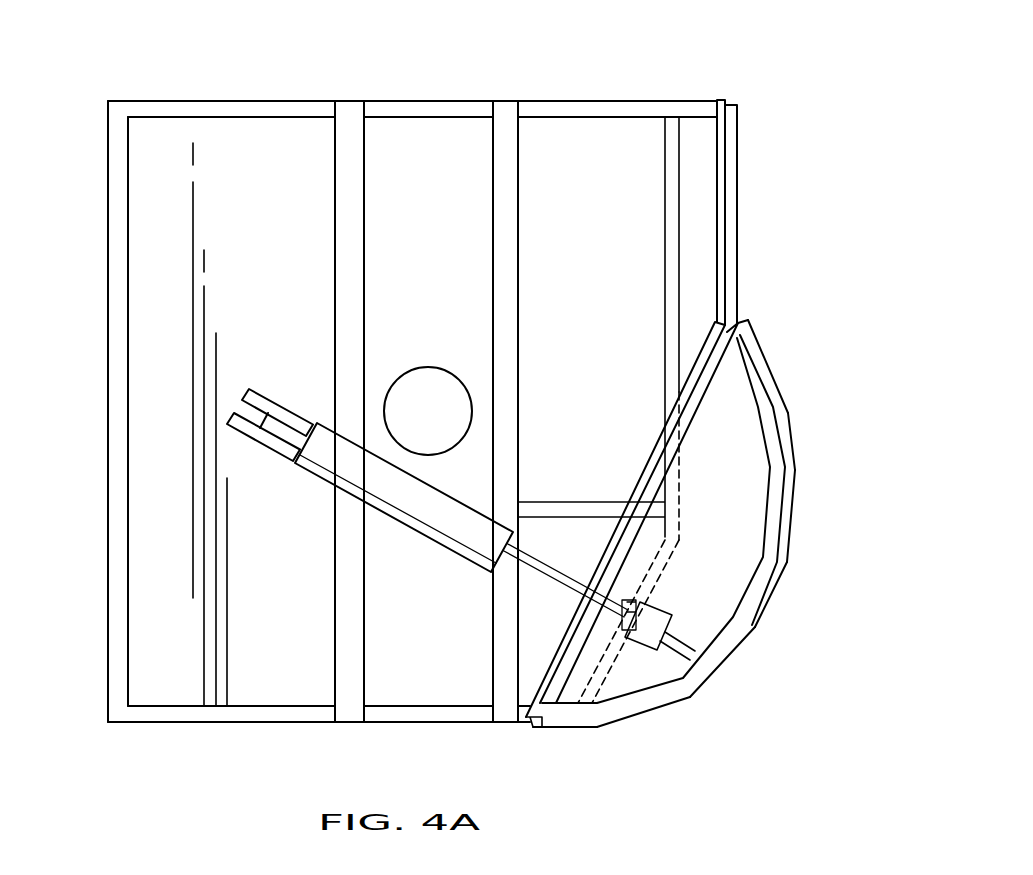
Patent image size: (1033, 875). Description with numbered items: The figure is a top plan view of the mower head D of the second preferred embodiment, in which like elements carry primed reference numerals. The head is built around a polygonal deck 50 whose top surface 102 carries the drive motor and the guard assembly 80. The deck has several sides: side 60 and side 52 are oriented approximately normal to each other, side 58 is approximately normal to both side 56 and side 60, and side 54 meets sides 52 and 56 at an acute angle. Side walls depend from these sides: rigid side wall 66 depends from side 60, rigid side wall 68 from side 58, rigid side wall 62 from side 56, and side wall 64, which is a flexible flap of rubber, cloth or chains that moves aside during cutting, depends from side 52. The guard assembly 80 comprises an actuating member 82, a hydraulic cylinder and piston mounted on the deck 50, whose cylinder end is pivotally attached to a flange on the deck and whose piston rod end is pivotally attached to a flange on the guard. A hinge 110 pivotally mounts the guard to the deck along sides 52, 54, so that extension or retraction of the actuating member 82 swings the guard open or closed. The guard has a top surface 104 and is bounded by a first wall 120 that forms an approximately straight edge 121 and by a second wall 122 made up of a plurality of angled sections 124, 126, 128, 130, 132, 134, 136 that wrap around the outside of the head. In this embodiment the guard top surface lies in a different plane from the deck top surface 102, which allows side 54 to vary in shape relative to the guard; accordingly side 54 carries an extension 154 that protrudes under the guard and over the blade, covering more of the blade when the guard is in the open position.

The side 60 is at (262, 108).
The side wall 66 is at (400, 100).
The side 58 is at (108, 178).
The side wall 68 is at (108, 296).
The polygonal deck 50 is at (170, 405).
The top surface 102 is at (160, 627).
The side 56 is at (175, 712).
The side wall 62 is at (262, 722).
The side 54 is at (656, 416).
The side 52 is at (727, 228).
The side wall 64 is at (738, 150).
The mower head D is at (767, 58).
The actuating member 82 is at (440, 525).
The extension 154 is at (662, 568).
The first wall 120 is at (650, 487).
The straight edge 121 is at (657, 450).
The angled section 136 is at (763, 353).
The angled section 134 is at (788, 433).
The top surface 104 is at (753, 492).
The angled section 132 is at (795, 523).
The angled section 130 is at (780, 590).
The second wall 122 is at (737, 622).
The angled section 128 is at (725, 665).
The angled section 126 is at (640, 718).
The angled section 124 is at (555, 727).
The hinge 110 is at (540, 705).
The guard assembly 80 is at (626, 733).